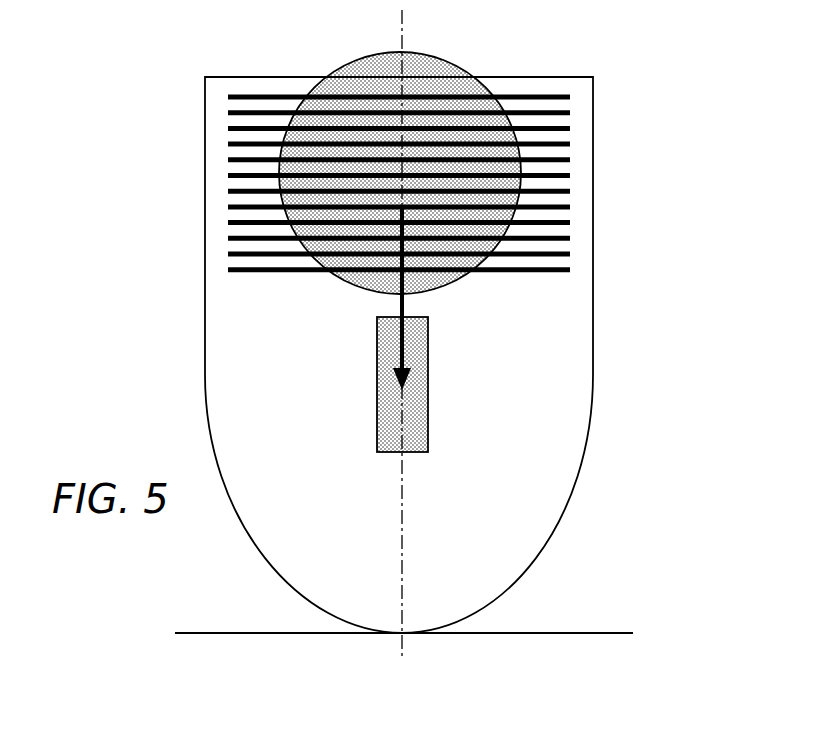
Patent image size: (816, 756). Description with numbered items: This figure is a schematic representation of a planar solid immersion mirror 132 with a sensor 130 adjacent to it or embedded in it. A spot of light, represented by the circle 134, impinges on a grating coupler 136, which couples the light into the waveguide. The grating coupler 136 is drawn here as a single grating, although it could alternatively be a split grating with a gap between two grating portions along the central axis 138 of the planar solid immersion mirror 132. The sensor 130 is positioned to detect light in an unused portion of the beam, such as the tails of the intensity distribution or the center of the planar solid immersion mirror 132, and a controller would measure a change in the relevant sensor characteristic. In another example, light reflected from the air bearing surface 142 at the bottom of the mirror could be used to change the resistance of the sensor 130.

The sensor 130 is at (428, 385).
The planar solid immersion mirror 132 is at (590, 430).
The spot of light 134 is at (367, 57).
The grating coupler 136 is at (562, 140).
The central axis 138 is at (403, 30).
The air bearing surface 142 is at (223, 632).